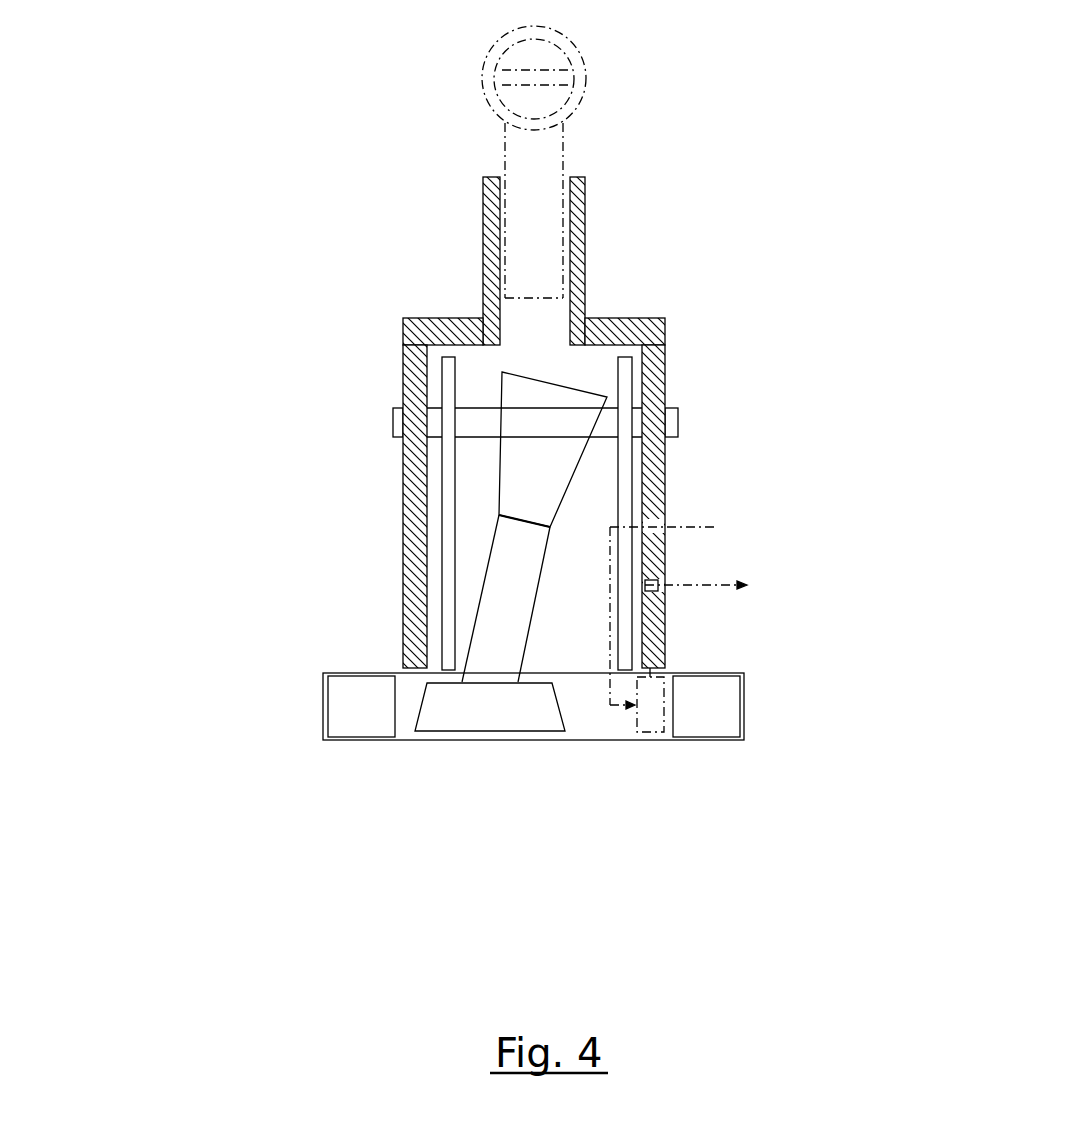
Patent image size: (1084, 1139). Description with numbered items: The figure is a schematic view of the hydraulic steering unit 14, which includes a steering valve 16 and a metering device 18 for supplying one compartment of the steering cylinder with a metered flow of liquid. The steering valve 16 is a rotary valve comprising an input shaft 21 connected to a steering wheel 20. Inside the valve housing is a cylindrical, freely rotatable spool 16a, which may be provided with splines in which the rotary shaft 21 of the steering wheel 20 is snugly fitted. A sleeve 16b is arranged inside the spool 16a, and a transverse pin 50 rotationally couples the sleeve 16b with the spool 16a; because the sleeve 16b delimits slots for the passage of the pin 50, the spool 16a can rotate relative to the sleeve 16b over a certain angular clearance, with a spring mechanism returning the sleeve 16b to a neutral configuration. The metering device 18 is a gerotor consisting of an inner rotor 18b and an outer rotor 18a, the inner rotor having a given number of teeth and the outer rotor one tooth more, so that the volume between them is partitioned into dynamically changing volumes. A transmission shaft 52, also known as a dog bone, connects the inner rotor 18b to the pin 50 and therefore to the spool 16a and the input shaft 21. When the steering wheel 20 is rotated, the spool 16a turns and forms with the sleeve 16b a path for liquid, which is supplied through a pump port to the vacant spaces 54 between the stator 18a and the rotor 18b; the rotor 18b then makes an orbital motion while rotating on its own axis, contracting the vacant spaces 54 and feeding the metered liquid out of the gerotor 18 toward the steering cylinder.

The steering unit 14 is at (333, 252).
The steering valve 16 is at (293, 423).
The spool 16a is at (403, 355).
The sleeve 16b is at (448, 550).
The metering device 18 is at (530, 857).
The outer rotor 18a is at (357, 723).
The inner rotor 18b is at (483, 712).
The steering wheel 20 is at (575, 95).
The input shaft 21 is at (552, 155).
The transverse pin 50 is at (670, 422).
The transmission shaft 52 is at (520, 618).
The vacant spaces 54 is at (653, 720).